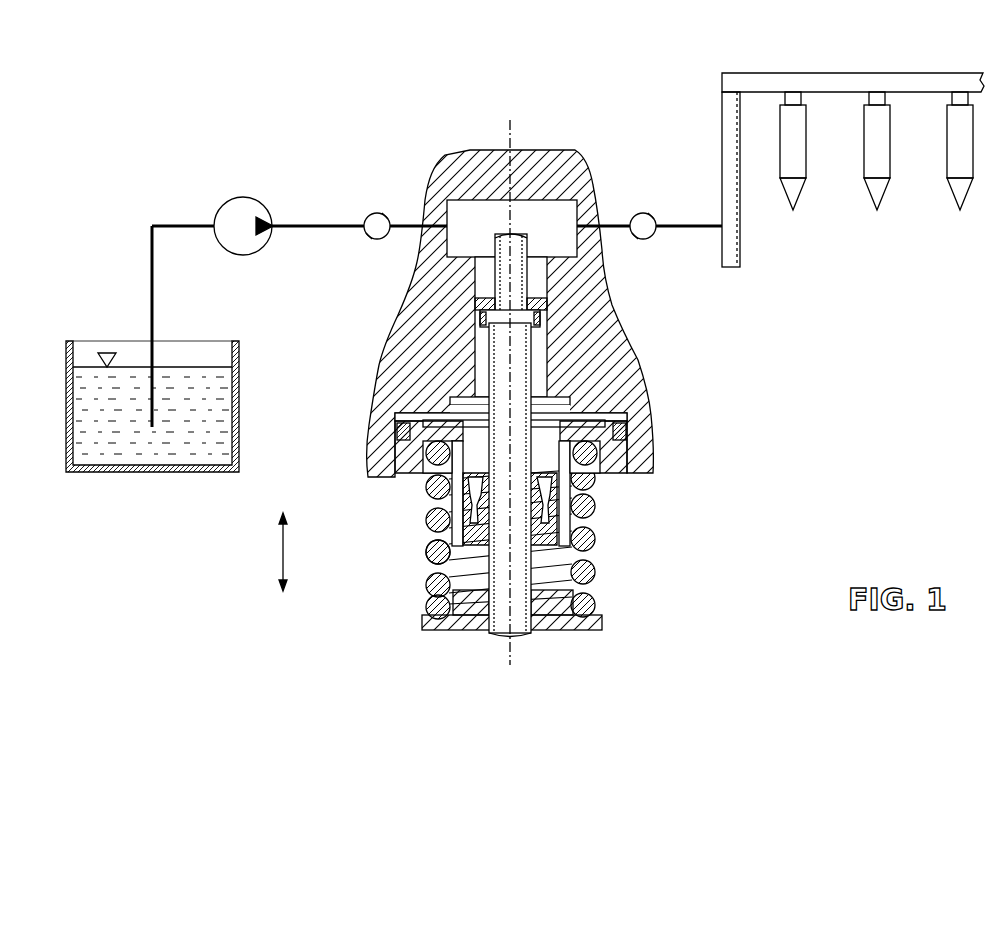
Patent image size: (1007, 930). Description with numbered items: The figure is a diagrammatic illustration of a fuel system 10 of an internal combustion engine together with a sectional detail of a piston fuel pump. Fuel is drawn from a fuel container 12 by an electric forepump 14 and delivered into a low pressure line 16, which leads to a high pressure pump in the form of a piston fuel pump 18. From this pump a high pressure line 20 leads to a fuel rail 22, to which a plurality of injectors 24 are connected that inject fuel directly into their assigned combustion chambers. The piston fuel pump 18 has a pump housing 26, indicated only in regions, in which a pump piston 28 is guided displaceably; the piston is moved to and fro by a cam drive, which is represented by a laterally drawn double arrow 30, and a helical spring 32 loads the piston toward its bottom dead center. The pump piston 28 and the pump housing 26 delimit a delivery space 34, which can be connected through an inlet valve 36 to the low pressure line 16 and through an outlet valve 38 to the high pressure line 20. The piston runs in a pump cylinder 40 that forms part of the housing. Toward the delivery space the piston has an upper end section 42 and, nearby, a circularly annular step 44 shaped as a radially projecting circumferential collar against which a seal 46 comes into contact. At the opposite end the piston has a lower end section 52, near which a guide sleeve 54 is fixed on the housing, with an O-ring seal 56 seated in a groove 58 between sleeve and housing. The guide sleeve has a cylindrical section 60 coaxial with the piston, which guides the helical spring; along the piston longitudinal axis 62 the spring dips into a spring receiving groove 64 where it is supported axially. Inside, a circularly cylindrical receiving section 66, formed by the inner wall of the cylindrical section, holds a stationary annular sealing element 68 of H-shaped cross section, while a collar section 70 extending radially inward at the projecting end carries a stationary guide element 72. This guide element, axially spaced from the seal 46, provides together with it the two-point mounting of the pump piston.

The fuel system 10 is at (166, 191).
The fuel container 12 is at (110, 474).
The electric forepump 14 is at (243, 208).
The low pressure line 16 is at (316, 222).
The piston fuel pump 18 is at (654, 349).
The high pressure line 20 is at (686, 222).
The fuel rail 22 is at (722, 82).
The injectors 24 is at (874, 150).
The pump housing 26 is at (418, 353).
The pump piston 28 is at (500, 378).
The double arrow 30 is at (283, 551).
The helical spring 32 is at (596, 574).
The delivery space 34 is at (484, 212).
The inlet valve 36 is at (372, 213).
The outlet valve 38 is at (640, 213).
The pump cylinder 40 is at (548, 363).
The upper end section 42 is at (540, 283).
The circularly annular step 44 is at (480, 316).
The seal 46 is at (466, 303).
The lower end section 52 is at (520, 608).
The guide sleeve 54 is at (625, 452).
The O-ring seal 56 is at (624, 432).
The groove 58 is at (400, 432).
The cylindrical section 60 is at (448, 491).
The piston longitudinal axis 62 is at (509, 645).
The spring receiving groove 64 is at (592, 460).
The receiving section 66 is at (460, 455).
The sealing element 68 is at (595, 508).
The collar section 70 is at (595, 540).
The guide element 72 is at (436, 553).